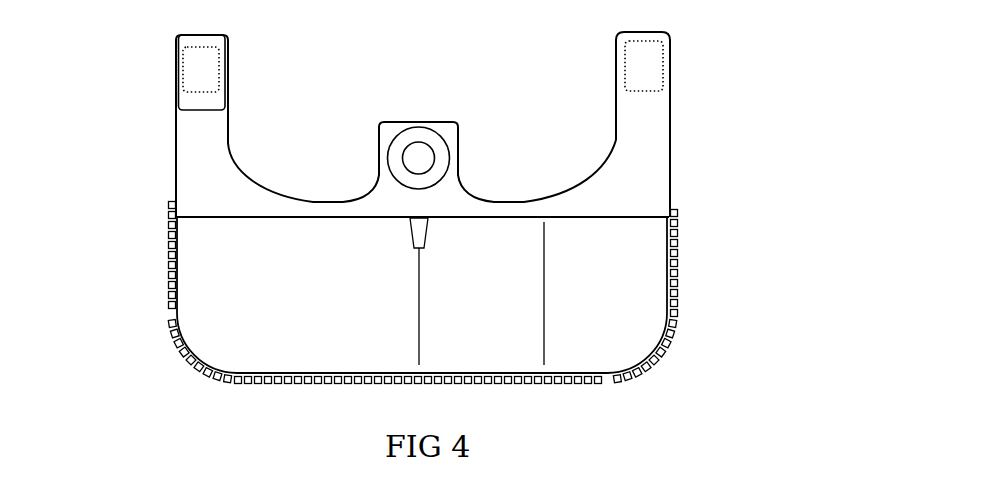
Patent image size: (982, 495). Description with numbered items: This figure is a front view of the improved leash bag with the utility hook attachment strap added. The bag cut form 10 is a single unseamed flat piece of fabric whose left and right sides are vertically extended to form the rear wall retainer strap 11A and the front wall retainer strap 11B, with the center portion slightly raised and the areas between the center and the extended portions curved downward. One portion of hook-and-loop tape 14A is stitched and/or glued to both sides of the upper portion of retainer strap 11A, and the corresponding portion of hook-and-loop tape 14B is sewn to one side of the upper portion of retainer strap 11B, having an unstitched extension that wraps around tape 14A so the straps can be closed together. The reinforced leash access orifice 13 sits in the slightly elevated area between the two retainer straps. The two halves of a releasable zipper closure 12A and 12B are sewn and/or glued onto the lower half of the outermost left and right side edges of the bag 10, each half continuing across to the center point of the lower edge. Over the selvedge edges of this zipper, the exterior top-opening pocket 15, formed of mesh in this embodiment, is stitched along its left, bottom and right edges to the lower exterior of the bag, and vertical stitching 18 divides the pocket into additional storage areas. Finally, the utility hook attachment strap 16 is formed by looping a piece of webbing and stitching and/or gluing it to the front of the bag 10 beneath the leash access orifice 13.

The bag cut form 10 is at (628, 191).
The vertical extension forming rear wall retainer strap 11A is at (176, 138).
The vertical extension forming front wall retainer strap 11B is at (677, 106).
The zipper on left side wall and left side lower edge 12A is at (167, 271).
The zipper on right wall and right lower edge 12B is at (680, 308).
The reinforced leash access orifice 13 is at (423, 120).
The one portion of hook-and-loop tape 14A is at (177, 68).
The corresponding portion of hook-and-loop tape 14B is at (671, 57).
The exterior top-opening pocket 15 is at (225, 274).
The utility hook attachment strap 16 is at (400, 247).
The vertical stitching to create divided pockets 18 is at (544, 312).